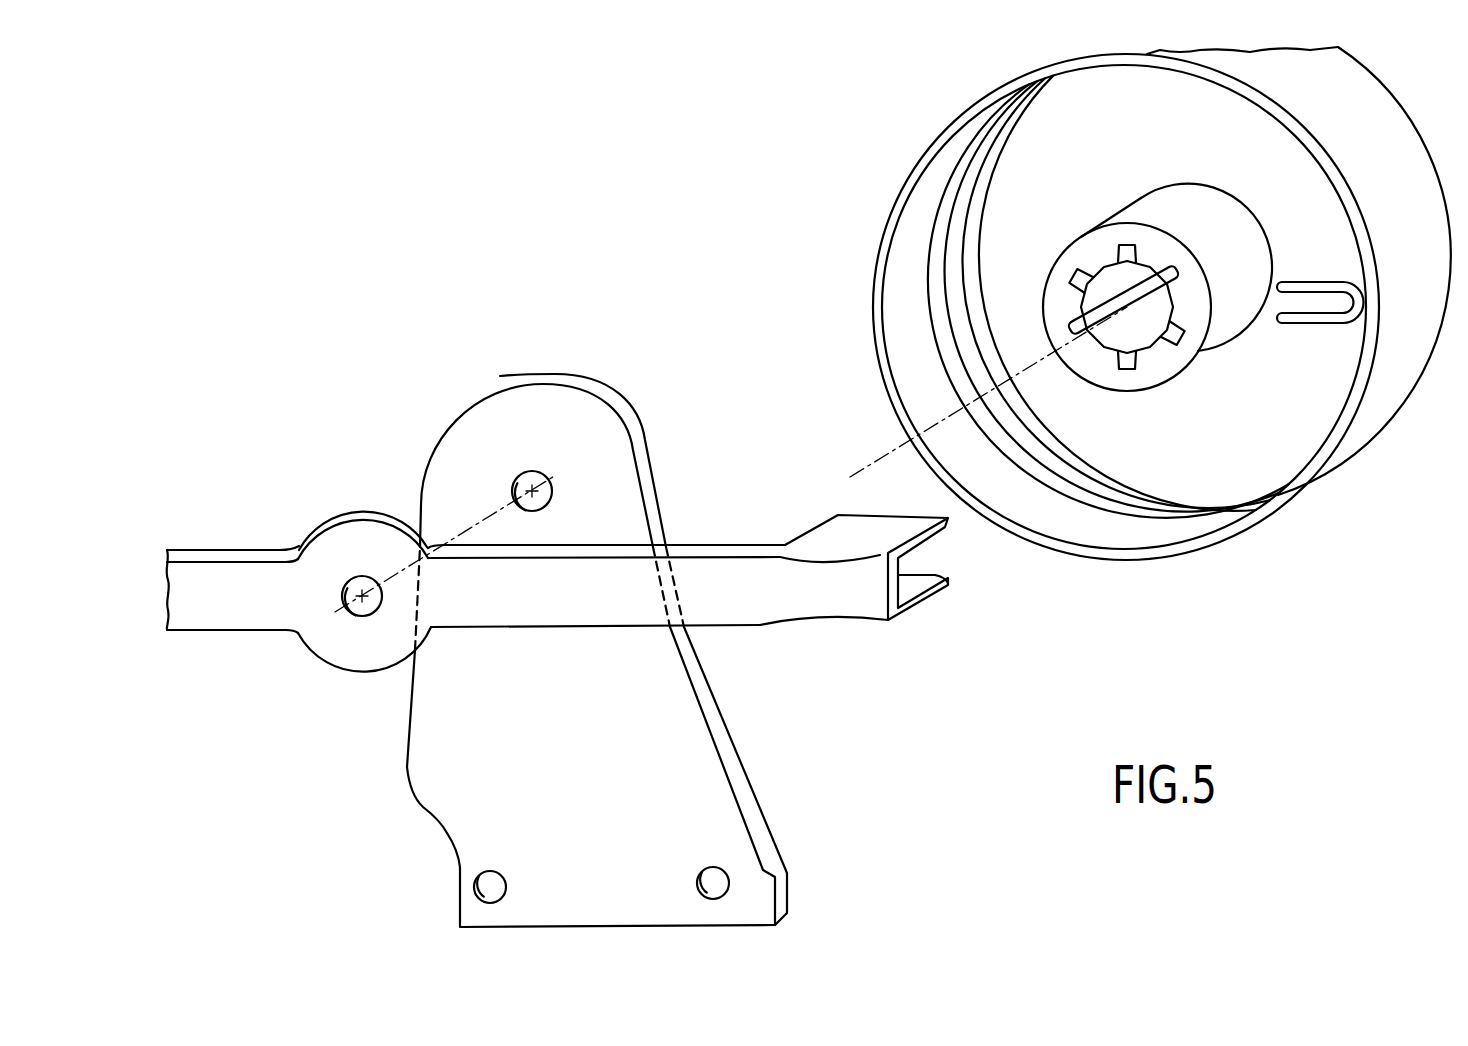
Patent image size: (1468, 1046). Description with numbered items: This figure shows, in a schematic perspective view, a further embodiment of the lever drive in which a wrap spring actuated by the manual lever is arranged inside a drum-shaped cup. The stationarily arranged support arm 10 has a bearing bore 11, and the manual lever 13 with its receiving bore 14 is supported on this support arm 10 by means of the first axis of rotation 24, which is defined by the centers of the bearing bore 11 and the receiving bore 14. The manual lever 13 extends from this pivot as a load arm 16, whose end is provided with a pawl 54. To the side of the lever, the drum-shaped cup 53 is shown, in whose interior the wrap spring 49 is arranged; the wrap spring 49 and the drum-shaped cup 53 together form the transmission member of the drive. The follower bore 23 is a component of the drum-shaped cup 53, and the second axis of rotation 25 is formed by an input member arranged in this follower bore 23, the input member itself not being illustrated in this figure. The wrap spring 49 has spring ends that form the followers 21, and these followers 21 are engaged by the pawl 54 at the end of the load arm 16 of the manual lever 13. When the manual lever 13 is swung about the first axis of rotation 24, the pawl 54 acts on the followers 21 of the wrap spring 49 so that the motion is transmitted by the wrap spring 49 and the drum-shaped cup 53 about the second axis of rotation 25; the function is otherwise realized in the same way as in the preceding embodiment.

The support arm 10 is at (585, 807).
The bearing bore 11 is at (520, 472).
The manual lever 13 is at (261, 632).
The receiving bore 14 is at (359, 618).
The load arm 16 is at (566, 611).
The followers 21 is at (1292, 292).
The follower bore 23 is at (1141, 322).
The first axis of rotation 24 is at (470, 523).
The second axis of rotation 25 is at (887, 452).
The wrap spring 49 is at (1105, 493).
The drum-shaped cup 53 is at (1150, 160).
The pawl 54 is at (838, 585).